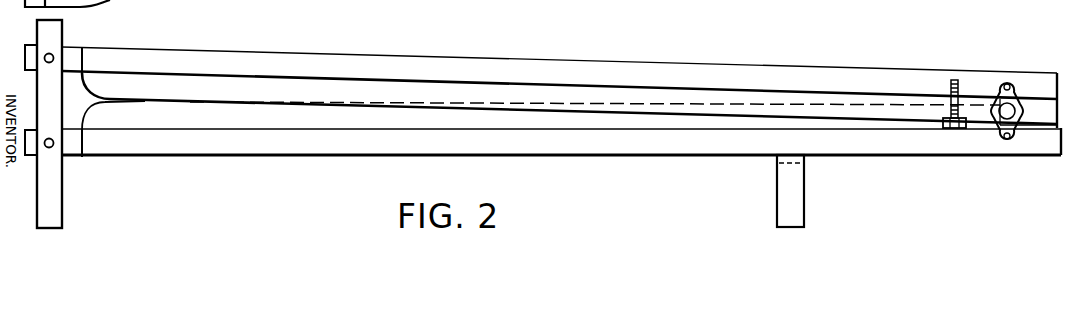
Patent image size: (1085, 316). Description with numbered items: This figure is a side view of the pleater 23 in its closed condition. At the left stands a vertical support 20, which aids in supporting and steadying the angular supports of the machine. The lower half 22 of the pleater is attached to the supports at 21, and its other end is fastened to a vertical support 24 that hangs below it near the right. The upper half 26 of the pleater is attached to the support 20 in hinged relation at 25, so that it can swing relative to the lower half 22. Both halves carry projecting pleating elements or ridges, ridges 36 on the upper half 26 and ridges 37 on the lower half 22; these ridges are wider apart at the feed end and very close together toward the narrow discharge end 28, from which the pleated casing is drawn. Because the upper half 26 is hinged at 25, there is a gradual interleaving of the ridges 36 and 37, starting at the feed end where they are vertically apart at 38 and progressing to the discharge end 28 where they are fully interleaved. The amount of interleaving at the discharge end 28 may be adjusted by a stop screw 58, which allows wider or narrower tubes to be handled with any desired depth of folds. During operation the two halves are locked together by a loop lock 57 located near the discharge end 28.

The vertical support 20 is at (63, 209).
The attachment point 21 is at (54, 145).
The lower half of the pleater 22 is at (328, 148).
The pleater 23 is at (581, 159).
The vertical support 24 is at (779, 196).
The hinge point 25 is at (54, 57).
The upper half of the pleater 26 is at (360, 66).
The discharge end 28 is at (1047, 110).
The pleating ridges of upper half 36 is at (270, 88).
The pleating ridges of lower half 37 is at (247, 118).
The vertically apart position of ridges 38 is at (143, 101).
The loop lock 57 is at (993, 105).
The stop screw 58 is at (942, 124).